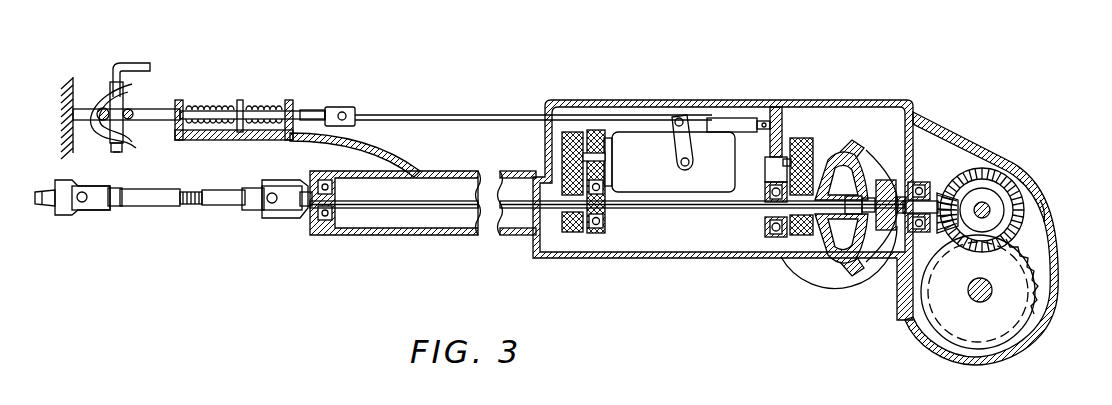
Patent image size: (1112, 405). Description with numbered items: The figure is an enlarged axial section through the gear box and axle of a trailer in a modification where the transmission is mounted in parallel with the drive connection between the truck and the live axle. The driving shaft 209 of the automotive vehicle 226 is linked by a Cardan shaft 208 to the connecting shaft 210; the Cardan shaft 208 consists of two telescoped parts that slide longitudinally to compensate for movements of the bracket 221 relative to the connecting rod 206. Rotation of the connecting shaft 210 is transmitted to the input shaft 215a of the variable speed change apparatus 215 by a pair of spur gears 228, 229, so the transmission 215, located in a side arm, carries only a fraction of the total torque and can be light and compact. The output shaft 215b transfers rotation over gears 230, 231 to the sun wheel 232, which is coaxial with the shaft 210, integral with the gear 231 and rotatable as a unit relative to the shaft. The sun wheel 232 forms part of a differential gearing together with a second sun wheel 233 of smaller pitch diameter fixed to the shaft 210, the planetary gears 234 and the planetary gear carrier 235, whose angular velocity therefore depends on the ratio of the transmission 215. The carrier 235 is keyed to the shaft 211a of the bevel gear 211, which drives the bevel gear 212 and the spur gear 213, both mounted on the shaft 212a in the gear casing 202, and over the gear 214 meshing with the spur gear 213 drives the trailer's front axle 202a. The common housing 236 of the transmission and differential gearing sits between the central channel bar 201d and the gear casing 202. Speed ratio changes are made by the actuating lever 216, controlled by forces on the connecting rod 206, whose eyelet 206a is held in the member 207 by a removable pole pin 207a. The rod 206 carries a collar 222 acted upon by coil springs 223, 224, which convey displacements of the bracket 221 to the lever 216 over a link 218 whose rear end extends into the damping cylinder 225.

The automotive vehicle 226 is at (72, 96).
The connecting rod 206 is at (151, 110).
The eyelet 206a is at (131, 109).
The member 207 is at (107, 83).
The pole pin 207a is at (128, 130).
The coil spring 224 is at (283, 138).
The coil spring 223 is at (189, 104).
The collar 222 is at (241, 106).
The link 218 is at (432, 116).
The bracket 221 is at (316, 152).
The driving shaft 209 is at (38, 203).
The Cardan shaft 208 is at (223, 201).
The central channel bar 201d is at (333, 233).
The connecting shaft 210 is at (692, 210).
The common housing 236 is at (648, 257).
The spur gear 228 is at (580, 228).
The spur gear 229 is at (562, 140).
The variable speed change apparatus 215 is at (625, 140).
The input shaft 215a is at (585, 157).
The output shaft 215b is at (783, 163).
The actuating lever 216 is at (683, 137).
The damping cylinder 225 is at (731, 120).
The gear 230 is at (798, 142).
The gear 231 is at (795, 237).
The planetary gear carrier 235 is at (880, 173).
The sun wheel 232 is at (845, 248).
The planetary gears 234 is at (845, 263).
The second sun wheel 233 is at (883, 257).
The bevel gear 211 is at (958, 182).
The shaft 211a is at (918, 208).
The bevel gear 212 is at (1018, 192).
The shaft 212a is at (988, 204).
The gear casing 202 is at (1048, 257).
The spur gear 213 is at (1046, 208).
The gear 214 is at (962, 322).
The driven axle 202a is at (1006, 267).